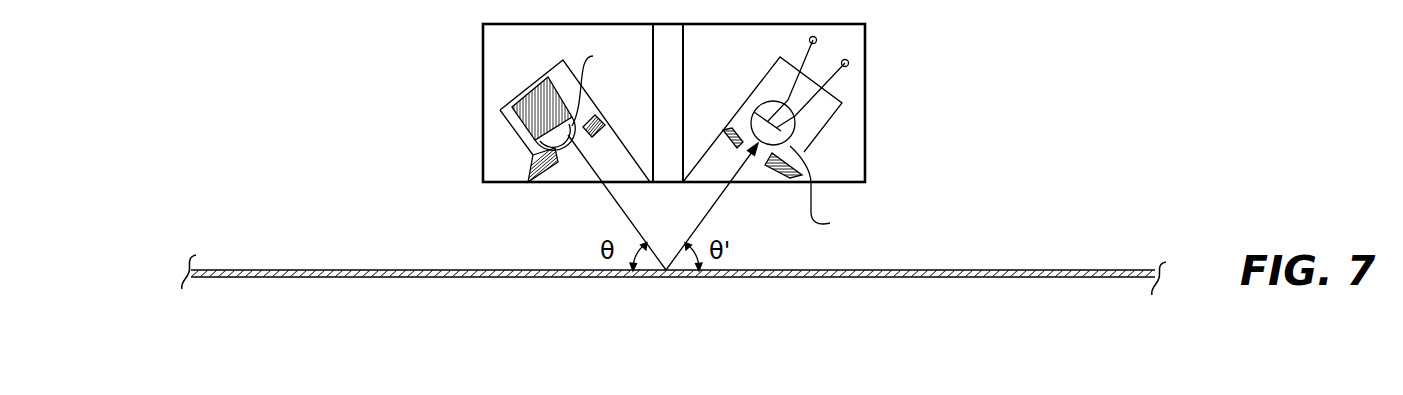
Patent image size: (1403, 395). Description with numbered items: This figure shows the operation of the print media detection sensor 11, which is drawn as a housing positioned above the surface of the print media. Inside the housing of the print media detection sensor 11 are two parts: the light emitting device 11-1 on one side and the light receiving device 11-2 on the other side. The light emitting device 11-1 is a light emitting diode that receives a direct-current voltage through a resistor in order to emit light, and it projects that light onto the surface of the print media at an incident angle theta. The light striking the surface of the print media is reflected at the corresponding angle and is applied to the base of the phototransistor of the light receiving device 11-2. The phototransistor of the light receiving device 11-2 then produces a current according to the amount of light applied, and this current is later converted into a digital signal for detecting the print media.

The print media detection sensor 11 is at (876, 65).
The light emitting device 11-1 is at (530, 92).
The light receiving device 11-2 is at (842, 103).